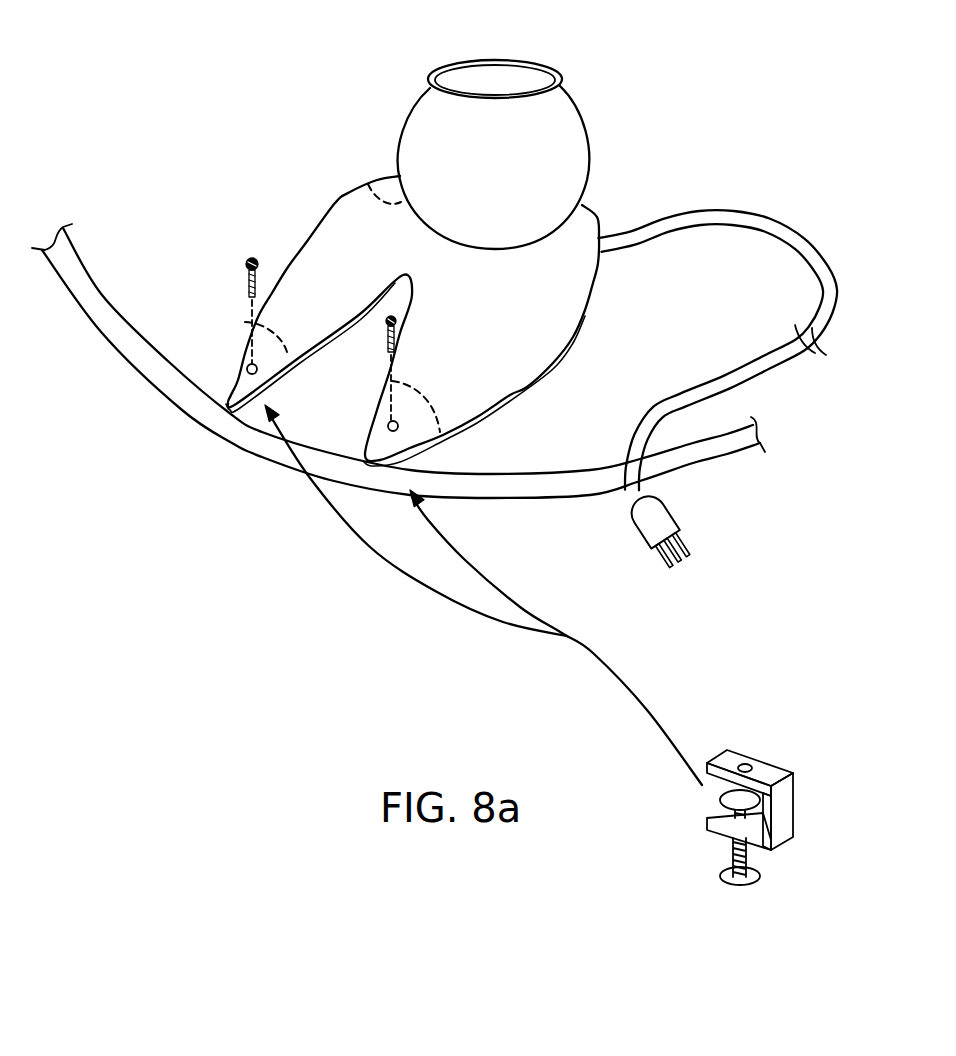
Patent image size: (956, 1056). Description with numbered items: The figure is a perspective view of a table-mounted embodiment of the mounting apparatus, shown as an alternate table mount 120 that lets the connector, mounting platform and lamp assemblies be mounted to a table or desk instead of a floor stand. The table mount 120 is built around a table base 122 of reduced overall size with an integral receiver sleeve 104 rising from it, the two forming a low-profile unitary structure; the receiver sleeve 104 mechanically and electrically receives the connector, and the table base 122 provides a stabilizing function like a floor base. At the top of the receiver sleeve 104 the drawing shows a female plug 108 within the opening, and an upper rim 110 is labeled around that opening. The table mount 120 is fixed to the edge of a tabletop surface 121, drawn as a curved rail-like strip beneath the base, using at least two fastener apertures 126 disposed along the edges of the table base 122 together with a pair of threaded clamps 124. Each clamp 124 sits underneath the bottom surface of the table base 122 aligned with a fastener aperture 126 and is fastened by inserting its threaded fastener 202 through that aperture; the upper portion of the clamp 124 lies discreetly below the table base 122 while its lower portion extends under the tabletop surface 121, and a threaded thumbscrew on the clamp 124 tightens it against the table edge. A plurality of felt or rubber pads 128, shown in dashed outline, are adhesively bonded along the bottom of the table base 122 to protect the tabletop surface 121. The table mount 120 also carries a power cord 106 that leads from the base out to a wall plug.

The receiver sleeve 104 is at (573, 143).
The power cord 106 is at (657, 437).
The female plug 108 is at (500, 88).
The rim 110 is at (448, 63).
The table mount 120 is at (320, 172).
The tabletop surface 121 is at (570, 449).
The table base 122 is at (567, 303).
The clamp 124 is at (782, 810).
The fastener apertures 126 is at (247, 368).
The pads 128 is at (396, 180).
The threaded fastener 202 is at (250, 259).